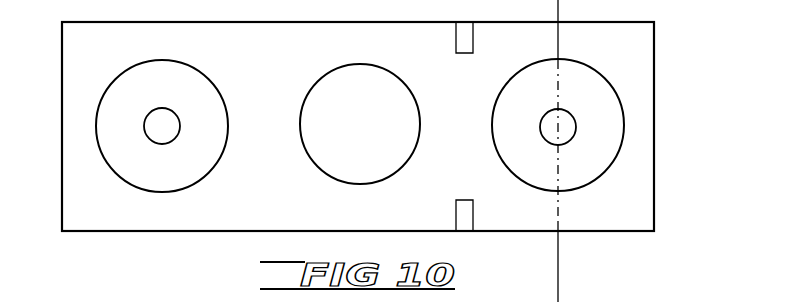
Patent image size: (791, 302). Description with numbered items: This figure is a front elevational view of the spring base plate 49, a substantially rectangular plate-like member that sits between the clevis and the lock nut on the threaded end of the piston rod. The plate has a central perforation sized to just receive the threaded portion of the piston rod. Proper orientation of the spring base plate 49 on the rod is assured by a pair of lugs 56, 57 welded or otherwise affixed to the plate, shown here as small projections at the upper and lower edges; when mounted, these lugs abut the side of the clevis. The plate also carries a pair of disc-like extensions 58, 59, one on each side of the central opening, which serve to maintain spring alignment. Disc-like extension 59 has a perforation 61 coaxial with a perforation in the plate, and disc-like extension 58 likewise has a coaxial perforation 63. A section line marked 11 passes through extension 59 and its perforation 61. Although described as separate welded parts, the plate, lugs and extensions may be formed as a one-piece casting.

The spring base plate 49 is at (640, 200).
The section line 11- 11 is at (572, 292).
The lug 56 is at (303, 125).
The lug 57 is at (497, 0).
The disc-like extension 58 is at (210, 80).
The disc-like extension 59 is at (618, 95).
The perforation 61 is at (576, 135).
The perforation 63 is at (160, 144).